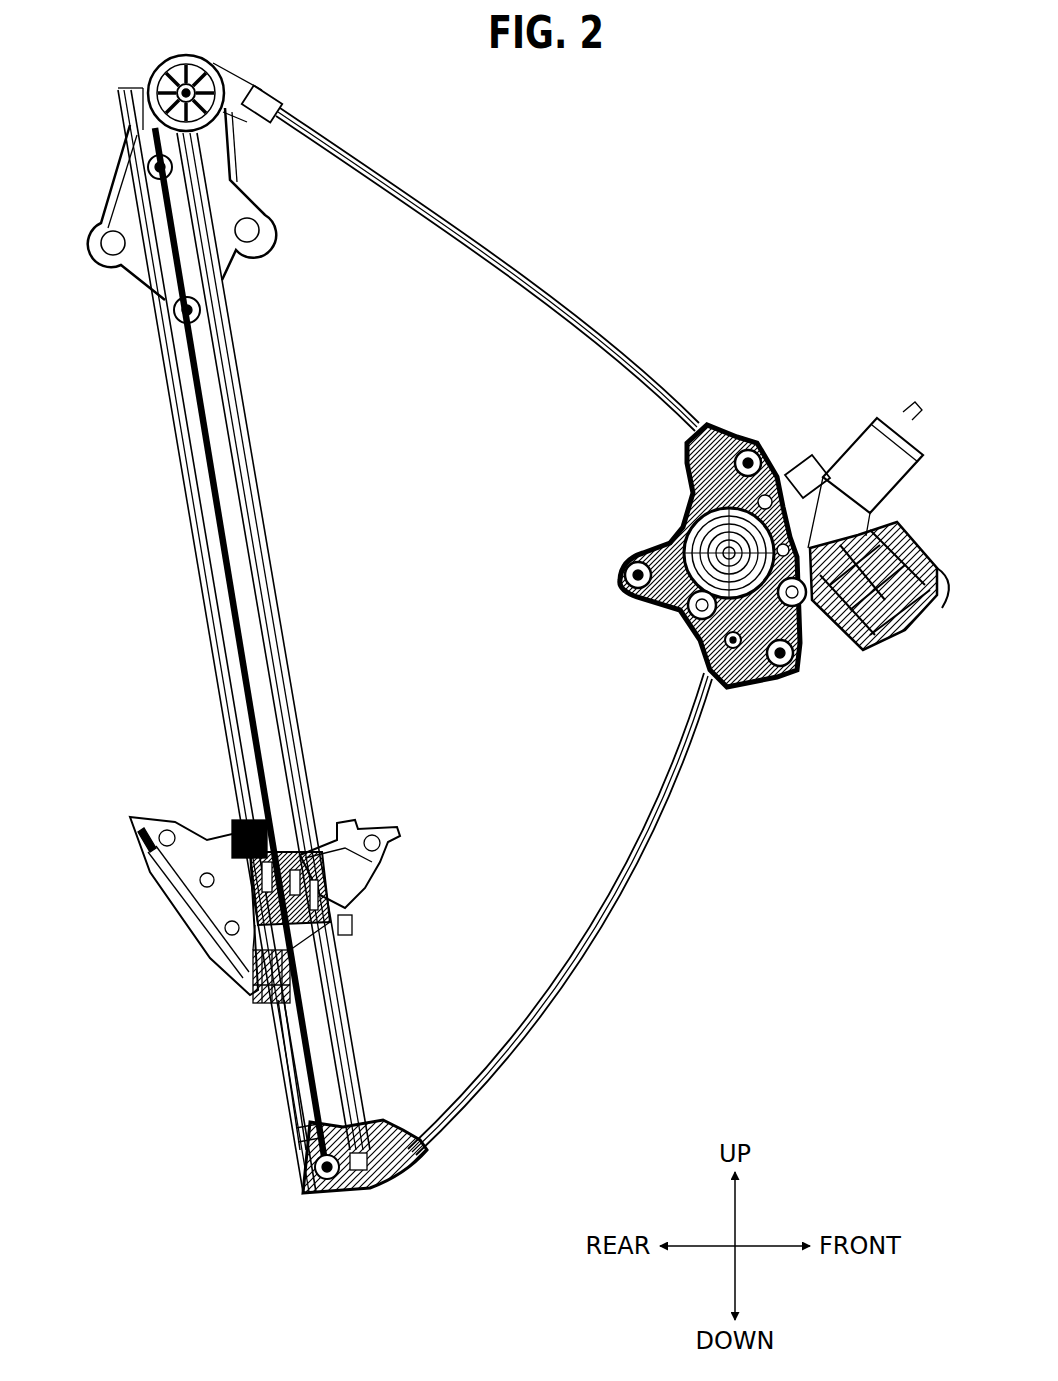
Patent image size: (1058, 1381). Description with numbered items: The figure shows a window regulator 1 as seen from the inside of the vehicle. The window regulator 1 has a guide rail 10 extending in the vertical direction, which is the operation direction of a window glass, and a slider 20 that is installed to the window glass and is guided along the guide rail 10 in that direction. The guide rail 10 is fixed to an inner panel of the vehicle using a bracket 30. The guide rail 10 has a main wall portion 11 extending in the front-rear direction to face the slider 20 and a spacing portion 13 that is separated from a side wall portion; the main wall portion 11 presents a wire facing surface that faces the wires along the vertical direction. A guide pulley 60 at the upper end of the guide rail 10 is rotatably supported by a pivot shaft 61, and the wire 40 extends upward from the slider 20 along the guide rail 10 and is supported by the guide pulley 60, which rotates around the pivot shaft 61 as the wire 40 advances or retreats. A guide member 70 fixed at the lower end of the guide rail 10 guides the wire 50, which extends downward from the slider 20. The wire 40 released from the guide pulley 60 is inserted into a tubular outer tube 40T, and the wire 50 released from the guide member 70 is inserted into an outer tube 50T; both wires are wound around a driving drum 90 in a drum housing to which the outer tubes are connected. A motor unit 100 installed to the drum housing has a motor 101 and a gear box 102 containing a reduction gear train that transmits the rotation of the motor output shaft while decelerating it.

The window regulator 1 is at (688, 240).
The guide rail 10 is at (227, 640).
The main wall portion 11 is at (235, 400).
The spacing portion 13 is at (175, 433).
The slider 20 is at (172, 903).
The bracket 30 is at (100, 222).
The wire 40 is at (222, 573).
The outer tube 40T is at (530, 267).
The wire 50 is at (327, 1030).
The outer tube 50T is at (578, 950).
The guide pulley 60 is at (182, 67).
The pivot shaft 61 is at (190, 84).
The guide member 70 is at (362, 1185).
The driving drum 90 is at (690, 530).
The motor unit 100 is at (876, 535).
The motor 101 is at (905, 455).
The gear box 102 is at (862, 620).